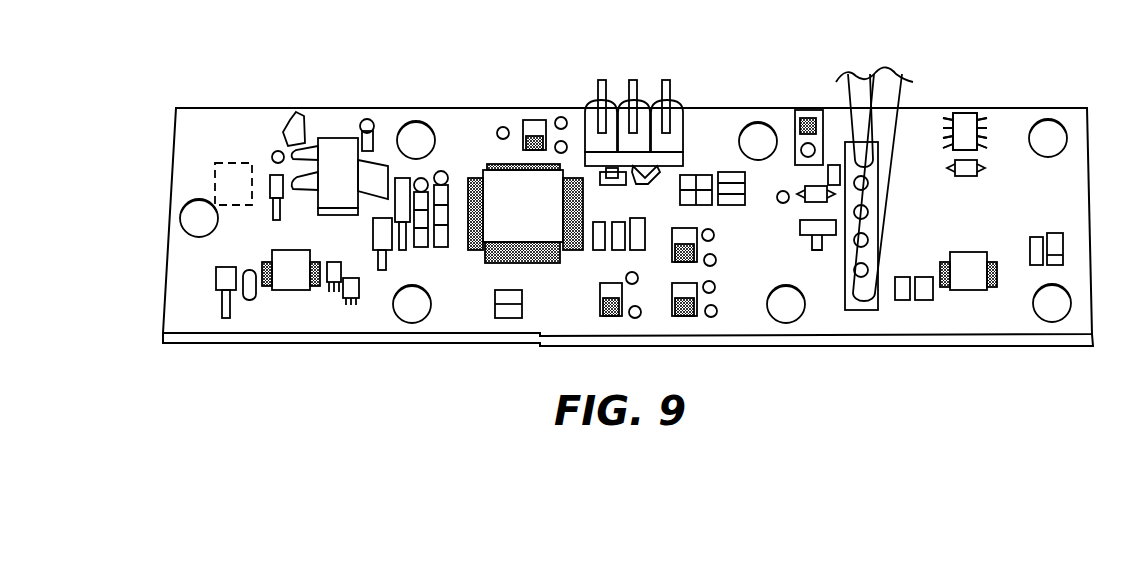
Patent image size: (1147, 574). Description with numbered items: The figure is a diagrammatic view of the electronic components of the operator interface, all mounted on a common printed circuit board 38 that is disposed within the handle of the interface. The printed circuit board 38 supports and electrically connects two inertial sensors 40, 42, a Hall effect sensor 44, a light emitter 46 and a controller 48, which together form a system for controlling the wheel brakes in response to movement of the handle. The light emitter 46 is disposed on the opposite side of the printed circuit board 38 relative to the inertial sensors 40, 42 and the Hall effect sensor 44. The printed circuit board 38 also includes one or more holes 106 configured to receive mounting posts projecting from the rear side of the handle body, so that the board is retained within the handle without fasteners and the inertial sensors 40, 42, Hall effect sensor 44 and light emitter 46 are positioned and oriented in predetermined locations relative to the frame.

The printed circuit board 38 is at (197, 118).
The inertial sensor 40 is at (977, 275).
The inertial sensor 42 is at (291, 277).
The Hall effect sensor 44 is at (965, 130).
The light emitter 46 is at (233, 184).
The controller 48 is at (497, 186).
The hole 106 is at (787, 298).